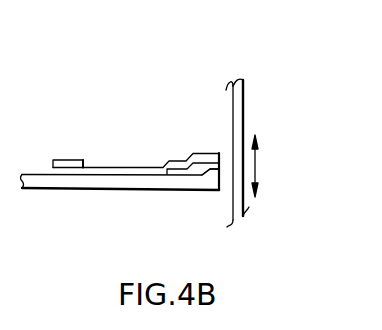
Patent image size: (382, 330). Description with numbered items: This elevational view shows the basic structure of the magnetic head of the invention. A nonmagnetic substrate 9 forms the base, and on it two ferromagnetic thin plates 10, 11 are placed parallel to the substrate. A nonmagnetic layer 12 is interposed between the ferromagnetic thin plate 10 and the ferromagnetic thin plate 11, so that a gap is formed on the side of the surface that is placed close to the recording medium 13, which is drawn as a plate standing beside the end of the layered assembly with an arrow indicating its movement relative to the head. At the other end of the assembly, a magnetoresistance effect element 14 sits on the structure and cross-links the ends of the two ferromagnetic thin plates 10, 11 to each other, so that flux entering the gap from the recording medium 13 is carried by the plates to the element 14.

The nonmagnetic substrate 9 is at (93, 181).
The ferromagnetic thin plate 10 is at (212, 173).
The ferromagnetic thin plate 11 is at (117, 168).
The nonmagnetic layer 12 is at (177, 178).
The recording medium 13 is at (244, 99).
The magnetoresistance effect element 14 is at (69, 163).